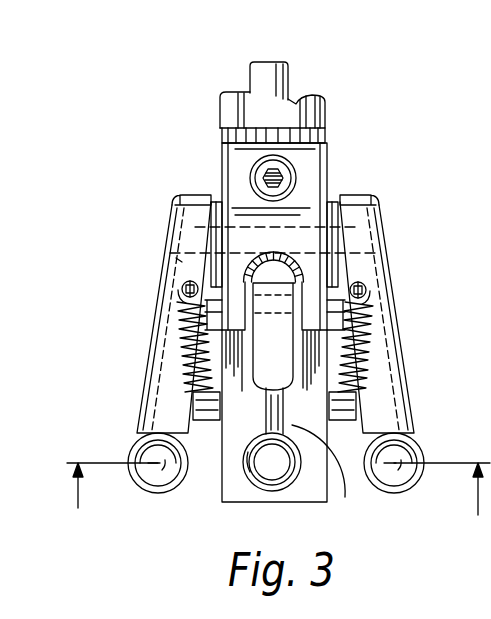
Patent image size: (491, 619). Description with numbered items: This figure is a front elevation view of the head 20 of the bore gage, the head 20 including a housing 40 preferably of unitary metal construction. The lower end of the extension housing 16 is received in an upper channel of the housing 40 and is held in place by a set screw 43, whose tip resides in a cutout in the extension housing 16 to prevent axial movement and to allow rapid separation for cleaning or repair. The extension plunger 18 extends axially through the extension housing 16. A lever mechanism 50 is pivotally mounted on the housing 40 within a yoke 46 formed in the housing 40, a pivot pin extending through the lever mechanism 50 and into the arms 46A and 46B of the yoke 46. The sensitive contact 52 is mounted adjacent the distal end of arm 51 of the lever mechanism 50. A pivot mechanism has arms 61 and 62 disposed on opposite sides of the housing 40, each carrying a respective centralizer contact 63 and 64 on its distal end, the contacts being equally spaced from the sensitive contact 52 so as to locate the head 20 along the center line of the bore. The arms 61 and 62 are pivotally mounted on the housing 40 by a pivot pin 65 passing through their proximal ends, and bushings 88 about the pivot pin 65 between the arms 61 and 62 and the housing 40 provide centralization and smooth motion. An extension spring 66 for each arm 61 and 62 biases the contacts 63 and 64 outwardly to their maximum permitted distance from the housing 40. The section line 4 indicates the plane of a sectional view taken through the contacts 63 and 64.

The section line 4- 4 is at (278, 507).
The extension housing 16 is at (327, 112).
The extension plunger 18 is at (290, 77).
The bore gage head 20 is at (150, 213).
The housing 40 is at (221, 147).
The set screw 43 is at (285, 178).
The yoke 46 is at (297, 262).
The arm of yoke 46A is at (185, 282).
The arm of yoke 46B is at (366, 285).
The lever mechanism 50 is at (306, 280).
The arm 51 is at (343, 498).
The sensitive contact 52 is at (277, 486).
The arm 61 is at (404, 362).
The arm 62 is at (149, 364).
The centralizer contact 63 is at (397, 492).
The centralizer contact 64 is at (154, 492).
The pivot pin 65 is at (176, 258).
The extension spring 66 is at (150, 328).
The bushings 88 is at (213, 201).